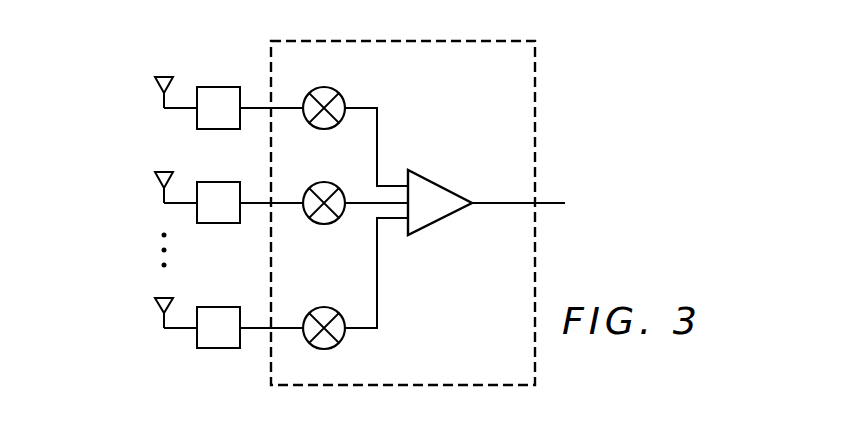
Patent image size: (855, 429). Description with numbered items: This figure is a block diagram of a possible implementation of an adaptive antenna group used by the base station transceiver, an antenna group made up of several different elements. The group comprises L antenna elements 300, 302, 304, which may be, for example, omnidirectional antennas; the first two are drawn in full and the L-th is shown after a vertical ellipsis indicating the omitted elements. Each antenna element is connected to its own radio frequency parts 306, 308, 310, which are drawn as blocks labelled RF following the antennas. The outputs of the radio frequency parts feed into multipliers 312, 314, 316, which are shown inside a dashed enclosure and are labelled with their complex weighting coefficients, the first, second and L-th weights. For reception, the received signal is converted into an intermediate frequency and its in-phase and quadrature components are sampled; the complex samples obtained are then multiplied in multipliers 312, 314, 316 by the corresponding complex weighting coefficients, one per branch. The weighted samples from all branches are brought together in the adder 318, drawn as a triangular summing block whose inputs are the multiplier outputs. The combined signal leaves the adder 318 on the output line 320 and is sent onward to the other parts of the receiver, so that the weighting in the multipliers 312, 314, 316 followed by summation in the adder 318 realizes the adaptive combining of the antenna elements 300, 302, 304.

The antenna element 300 is at (160, 100).
The antenna element 302 is at (160, 195).
The antenna element 304 is at (160, 320).
The radio frequency parts 306 is at (218, 86).
The radio frequency parts 308 is at (217, 224).
The radio frequency parts 310 is at (217, 349).
The multiplier 312 is at (345, 98).
The multiplier 314 is at (333, 223).
The multiplier 316 is at (345, 338).
The adder 318 is at (440, 183).
The combined output 320 is at (492, 204).